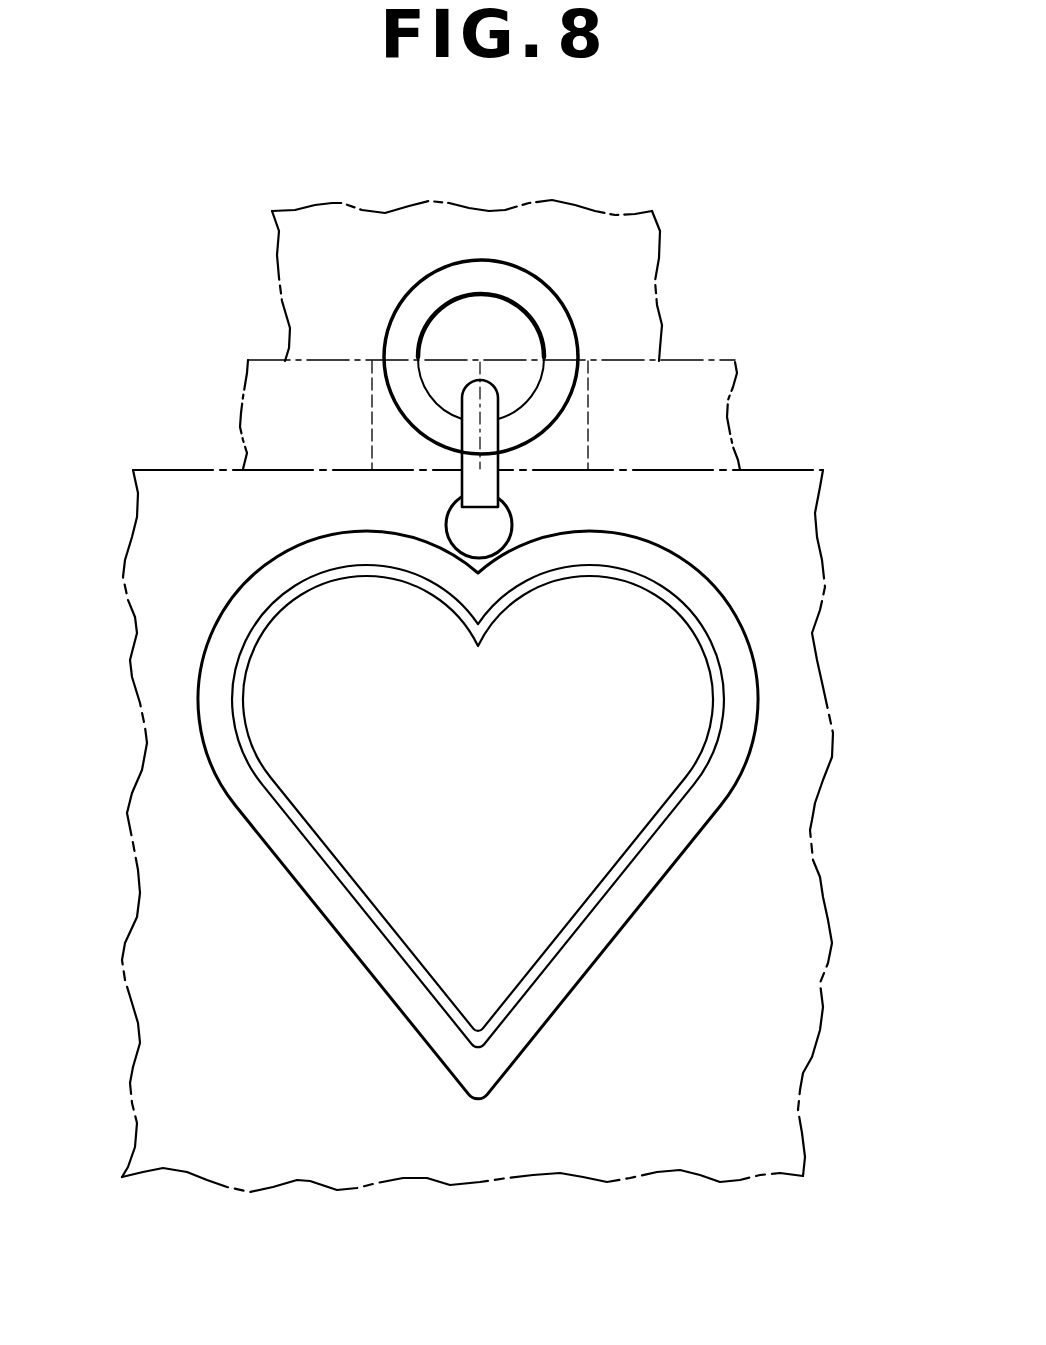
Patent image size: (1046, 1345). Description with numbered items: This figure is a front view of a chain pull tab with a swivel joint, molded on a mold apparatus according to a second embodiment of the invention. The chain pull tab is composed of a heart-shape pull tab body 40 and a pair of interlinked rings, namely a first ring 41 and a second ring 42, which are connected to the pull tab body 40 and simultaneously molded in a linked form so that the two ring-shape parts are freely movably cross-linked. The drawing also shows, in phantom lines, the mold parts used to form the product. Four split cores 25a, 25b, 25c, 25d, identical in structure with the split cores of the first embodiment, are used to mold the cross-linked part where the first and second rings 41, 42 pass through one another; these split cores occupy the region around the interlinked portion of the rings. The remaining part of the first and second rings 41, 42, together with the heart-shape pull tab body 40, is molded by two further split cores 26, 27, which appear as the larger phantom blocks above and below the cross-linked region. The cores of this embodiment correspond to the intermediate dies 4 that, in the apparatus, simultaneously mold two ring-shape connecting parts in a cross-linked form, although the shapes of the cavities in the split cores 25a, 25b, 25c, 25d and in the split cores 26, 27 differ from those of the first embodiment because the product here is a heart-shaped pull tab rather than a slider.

The intermediate dies 4 is at (239, 385).
The split core 25a is at (380, 447).
The split core 25b is at (570, 440).
The split core 25c is at (209, 414).
The split core 25d is at (745, 415).
The split core 26 is at (428, 232).
The split core 27 is at (477, 694).
The heart-shape pull tab body 40 is at (606, 955).
The first ring 41 is at (547, 308).
The second ring 42 is at (504, 487).